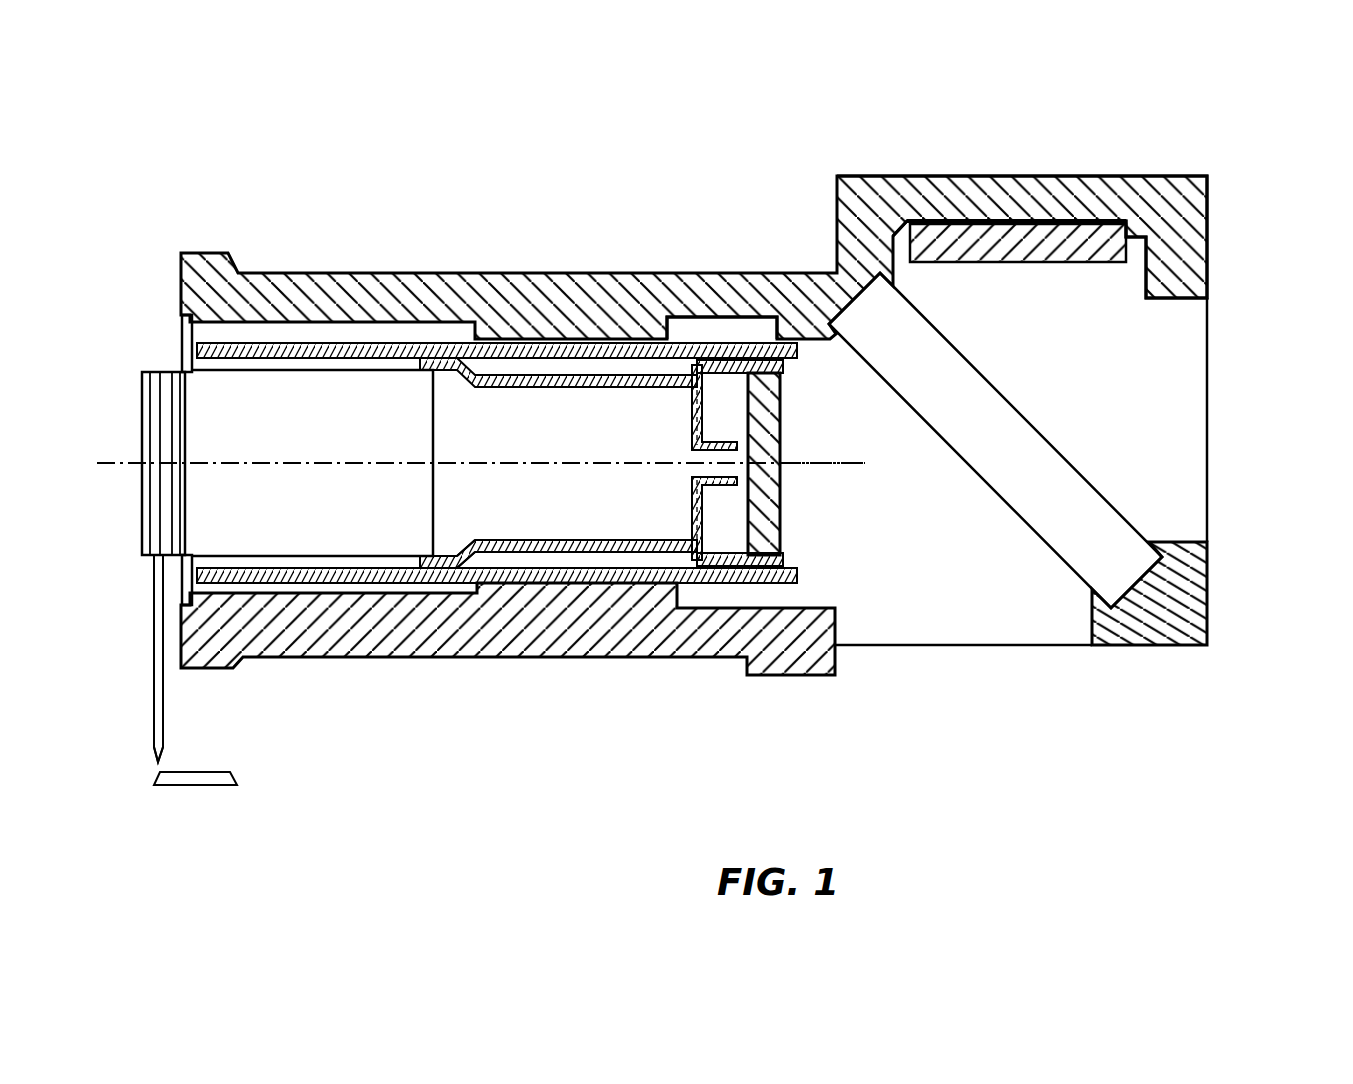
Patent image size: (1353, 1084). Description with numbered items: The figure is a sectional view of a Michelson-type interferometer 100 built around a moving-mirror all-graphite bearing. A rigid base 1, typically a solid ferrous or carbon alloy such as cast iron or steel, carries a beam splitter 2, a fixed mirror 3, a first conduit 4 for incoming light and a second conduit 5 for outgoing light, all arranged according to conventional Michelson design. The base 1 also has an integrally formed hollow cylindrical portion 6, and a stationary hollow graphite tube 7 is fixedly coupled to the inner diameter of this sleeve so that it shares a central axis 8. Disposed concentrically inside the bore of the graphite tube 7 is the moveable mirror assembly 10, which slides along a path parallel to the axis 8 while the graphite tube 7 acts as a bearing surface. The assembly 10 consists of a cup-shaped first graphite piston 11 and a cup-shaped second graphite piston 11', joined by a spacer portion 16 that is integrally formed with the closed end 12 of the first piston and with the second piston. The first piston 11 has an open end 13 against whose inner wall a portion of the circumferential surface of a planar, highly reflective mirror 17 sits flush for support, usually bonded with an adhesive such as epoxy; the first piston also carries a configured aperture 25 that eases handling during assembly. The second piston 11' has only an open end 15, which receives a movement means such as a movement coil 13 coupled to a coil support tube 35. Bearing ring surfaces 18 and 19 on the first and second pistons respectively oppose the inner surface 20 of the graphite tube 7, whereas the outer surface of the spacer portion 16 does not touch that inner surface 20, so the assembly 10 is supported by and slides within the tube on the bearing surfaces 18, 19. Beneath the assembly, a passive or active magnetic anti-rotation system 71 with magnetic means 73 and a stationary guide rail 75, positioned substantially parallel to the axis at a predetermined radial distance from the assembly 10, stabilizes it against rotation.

The interferometer 100 is at (365, 148).
The rigid base 1 is at (1214, 613).
The beam splitter 2 is at (985, 462).
The fixed mirror 3 is at (1005, 265).
The first conduit 4 is at (1214, 420).
The second conduit 5 is at (940, 658).
The hollow cylindrical portion 6 is at (386, 266).
The stationary hollow graphite tube 7 is at (732, 336).
The central axis 8 is at (566, 456).
The moveable mirror assembly 10 is at (824, 463).
The first graphite piston 11 is at (684, 608).
The second graphite piston 11' is at (475, 624).
The closed end 12 is at (681, 408).
The open end 13 is at (143, 499).
The open end 15 is at (405, 565).
The spacer portion 16 is at (621, 366).
The mirror 17 is at (793, 496).
The bearing ring surface 18 is at (775, 344).
The bearing ring surface 19 is at (425, 341).
The inner surface 20 is at (256, 361).
The aperture 25 is at (697, 469).
The coil support tube 35 is at (306, 434).
The magnetic anti-rotation system 71 is at (168, 690).
The magnetic means 73 is at (153, 752).
The stationary guide rail 75 is at (193, 789).